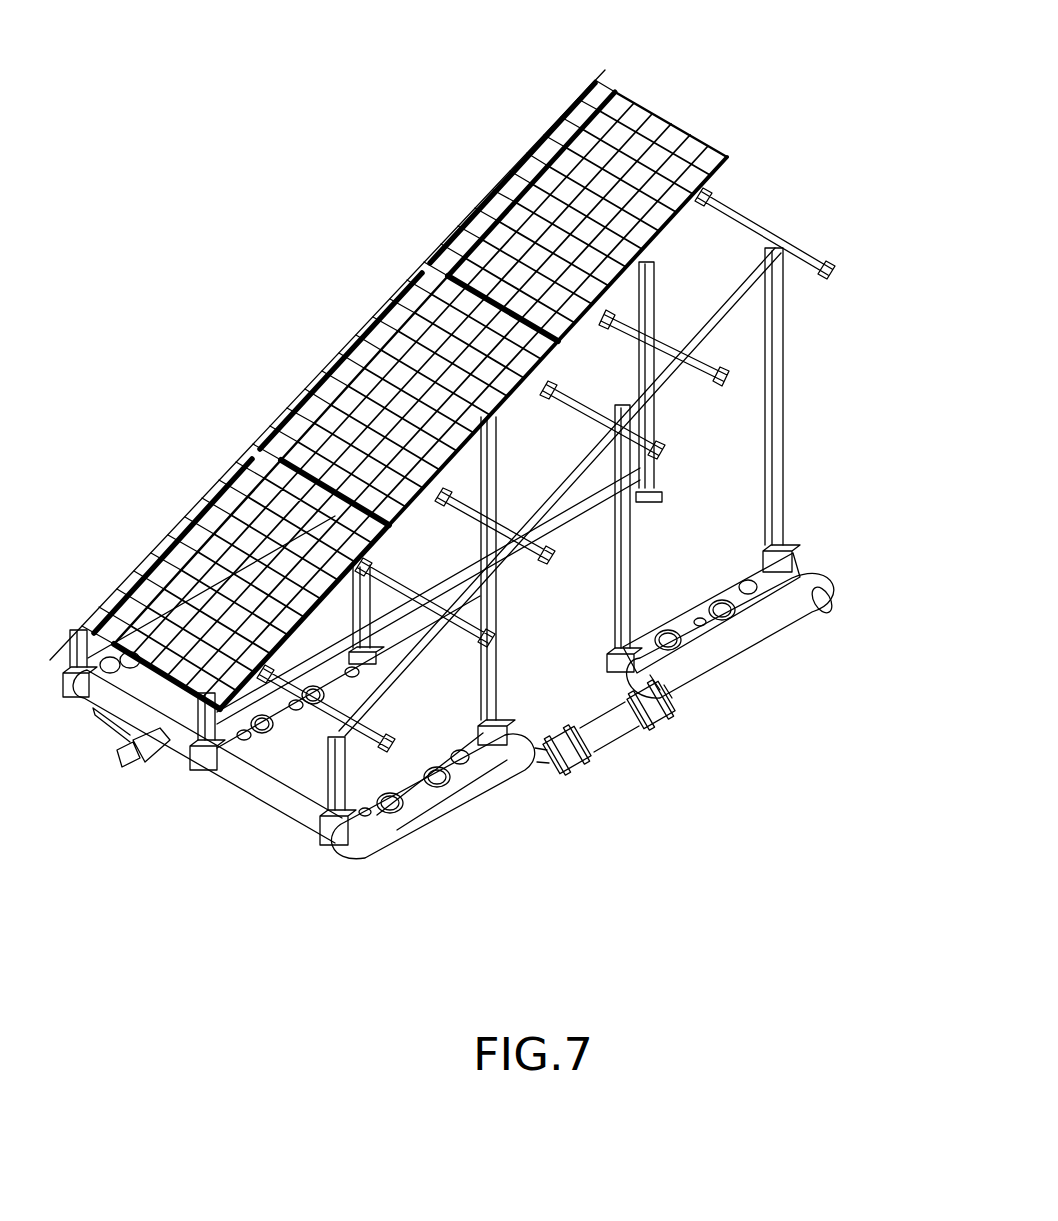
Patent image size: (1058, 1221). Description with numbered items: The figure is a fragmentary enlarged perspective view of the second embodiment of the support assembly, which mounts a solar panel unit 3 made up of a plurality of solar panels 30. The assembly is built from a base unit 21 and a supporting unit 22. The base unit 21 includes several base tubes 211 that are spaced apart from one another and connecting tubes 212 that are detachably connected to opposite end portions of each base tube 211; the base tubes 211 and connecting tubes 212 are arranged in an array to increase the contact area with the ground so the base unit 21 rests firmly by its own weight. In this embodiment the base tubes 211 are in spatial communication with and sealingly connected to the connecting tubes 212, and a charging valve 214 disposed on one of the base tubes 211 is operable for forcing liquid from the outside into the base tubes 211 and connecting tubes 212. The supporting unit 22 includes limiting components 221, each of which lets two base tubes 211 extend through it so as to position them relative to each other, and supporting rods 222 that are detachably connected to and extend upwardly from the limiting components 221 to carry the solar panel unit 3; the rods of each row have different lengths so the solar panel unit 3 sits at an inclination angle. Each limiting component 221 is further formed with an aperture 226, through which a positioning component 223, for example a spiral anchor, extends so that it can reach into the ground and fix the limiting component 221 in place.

The solar panel unit 3 is at (678, 109).
The solar panel 30 is at (698, 140).
The base unit 21 is at (246, 796).
The base tube 211 is at (706, 528).
The connecting tube 212 is at (630, 748).
The charging valve 214 is at (122, 770).
The supporting unit 22 is at (794, 387).
The limiting component 221 is at (788, 545).
The supporting rod 222 is at (780, 450).
The positioning component 223 is at (706, 628).
The aperture 226 is at (722, 652).